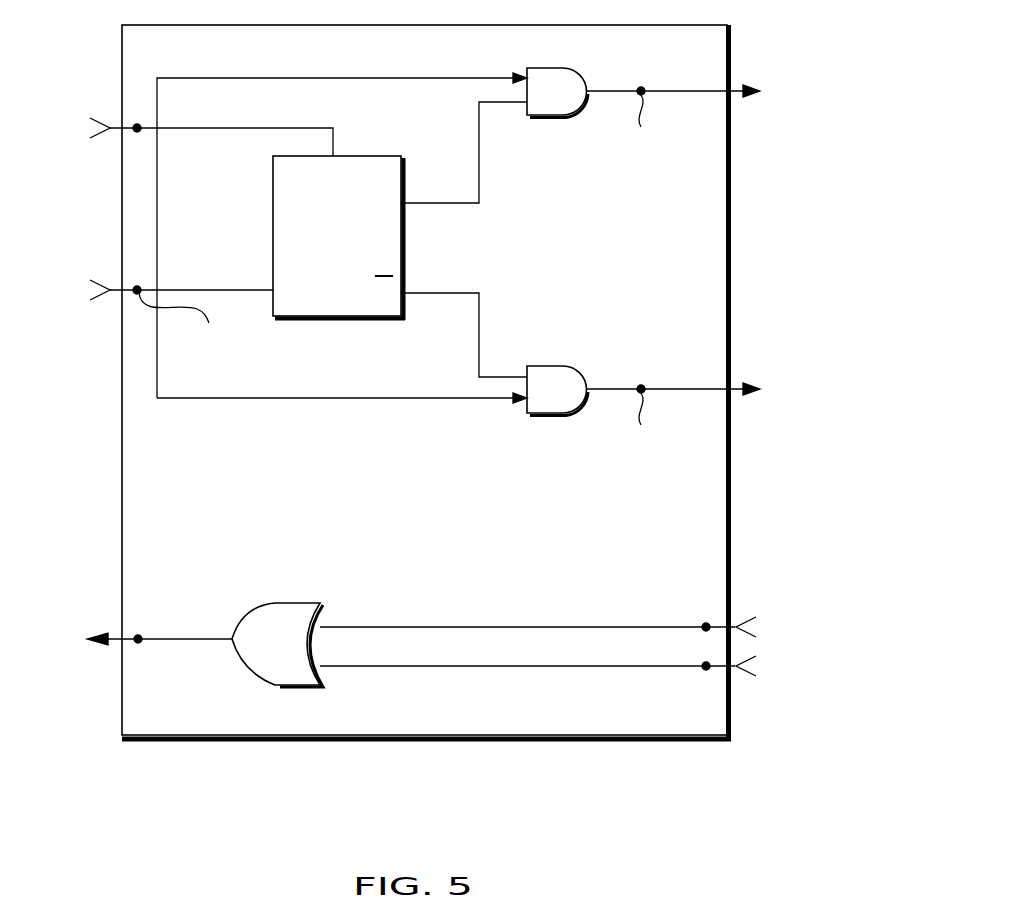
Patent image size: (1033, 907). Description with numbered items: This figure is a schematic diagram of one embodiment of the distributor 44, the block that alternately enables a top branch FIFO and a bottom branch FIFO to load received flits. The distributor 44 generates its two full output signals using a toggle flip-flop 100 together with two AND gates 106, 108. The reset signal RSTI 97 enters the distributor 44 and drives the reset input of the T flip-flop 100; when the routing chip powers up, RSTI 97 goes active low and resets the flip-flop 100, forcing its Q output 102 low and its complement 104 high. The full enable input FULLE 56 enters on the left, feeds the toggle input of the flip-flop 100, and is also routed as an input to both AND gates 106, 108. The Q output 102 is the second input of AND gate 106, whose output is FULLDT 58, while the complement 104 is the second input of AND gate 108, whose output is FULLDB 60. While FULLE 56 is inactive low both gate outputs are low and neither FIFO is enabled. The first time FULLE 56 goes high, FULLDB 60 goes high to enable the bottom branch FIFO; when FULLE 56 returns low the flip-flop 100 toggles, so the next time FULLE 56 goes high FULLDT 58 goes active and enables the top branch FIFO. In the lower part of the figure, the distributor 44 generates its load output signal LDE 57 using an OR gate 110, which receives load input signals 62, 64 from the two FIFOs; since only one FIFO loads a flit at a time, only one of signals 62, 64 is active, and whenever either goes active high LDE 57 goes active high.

The distributor 44 is at (605, 742).
The reset signal RSTI 97 is at (181, 134).
The FULLE 56 is at (144, 326).
The toggle flip-flop 100 is at (352, 274).
The Q output 102 is at (464, 154).
The complement output 104 is at (464, 321).
The AND gate 106 is at (570, 102).
The AND gate 108 is at (570, 404).
The FULLDT 58 is at (718, 145).
The FULLDB 60 is at (721, 441).
The OR gate 110 is at (294, 656).
The load output signal LDE 57 is at (137, 612).
The load input signal 62 is at (589, 607).
The load input signal 64 is at (589, 690).